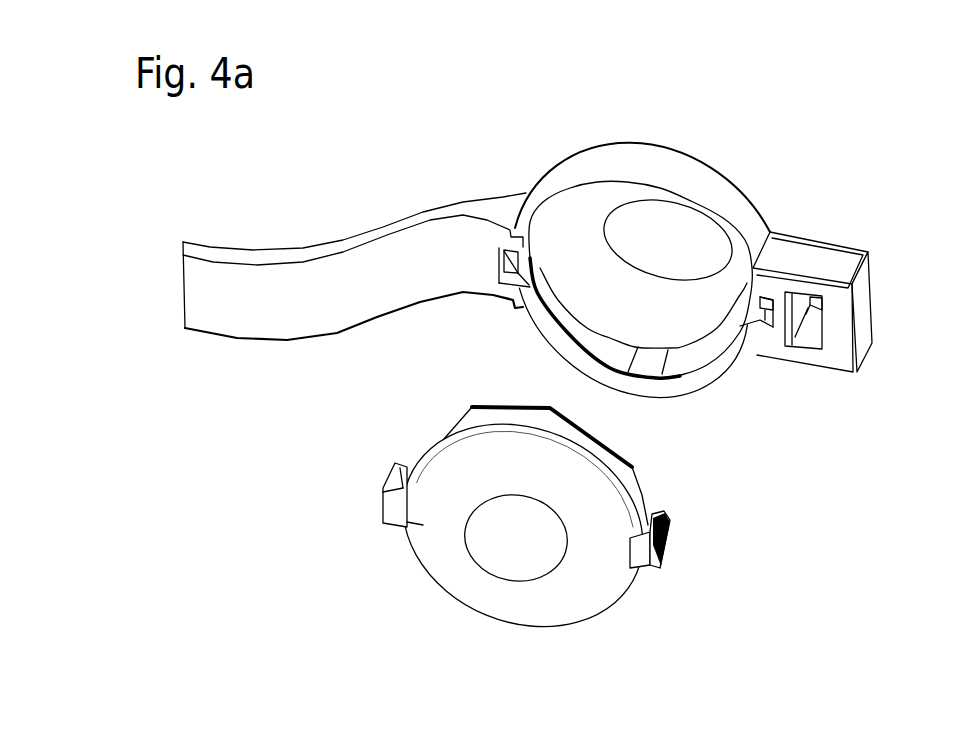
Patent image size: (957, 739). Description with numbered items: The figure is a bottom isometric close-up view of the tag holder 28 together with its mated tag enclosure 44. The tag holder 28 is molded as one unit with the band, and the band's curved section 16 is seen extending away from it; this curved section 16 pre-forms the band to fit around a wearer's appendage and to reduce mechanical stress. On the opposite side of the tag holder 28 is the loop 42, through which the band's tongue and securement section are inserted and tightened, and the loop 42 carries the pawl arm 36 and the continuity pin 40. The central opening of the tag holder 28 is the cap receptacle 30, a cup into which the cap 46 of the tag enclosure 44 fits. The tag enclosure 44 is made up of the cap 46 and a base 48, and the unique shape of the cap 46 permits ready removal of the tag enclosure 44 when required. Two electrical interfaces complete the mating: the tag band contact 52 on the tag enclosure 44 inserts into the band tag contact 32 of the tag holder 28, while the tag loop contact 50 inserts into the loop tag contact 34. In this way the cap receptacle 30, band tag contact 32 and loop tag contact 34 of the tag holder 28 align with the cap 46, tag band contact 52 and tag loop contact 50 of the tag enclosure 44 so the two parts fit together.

The curved section 16 is at (300, 236).
The tag holder 28 is at (553, 162).
The cap receptacle 30 is at (648, 318).
The band tag contact 32 is at (503, 291).
The loop tag contact 34 is at (759, 334).
The pawl arm 36 is at (797, 350).
The continuity pin 40 is at (836, 316).
The loop 42 is at (816, 242).
The tag enclosure 44 is at (322, 520).
The cap 46 is at (648, 485).
The base 48 is at (451, 570).
The tag loop contact 50 is at (648, 584).
The tag band contact 52 is at (391, 450).